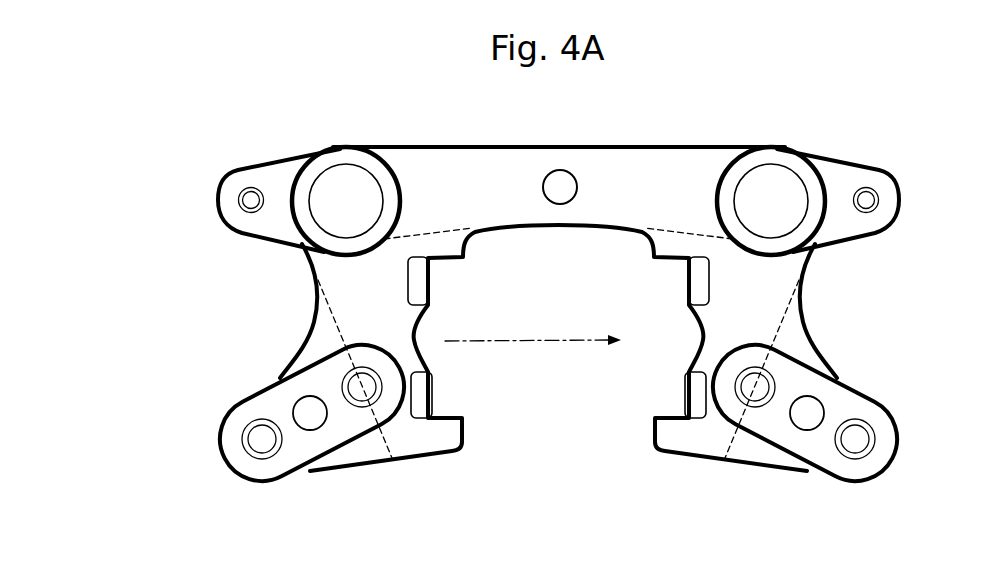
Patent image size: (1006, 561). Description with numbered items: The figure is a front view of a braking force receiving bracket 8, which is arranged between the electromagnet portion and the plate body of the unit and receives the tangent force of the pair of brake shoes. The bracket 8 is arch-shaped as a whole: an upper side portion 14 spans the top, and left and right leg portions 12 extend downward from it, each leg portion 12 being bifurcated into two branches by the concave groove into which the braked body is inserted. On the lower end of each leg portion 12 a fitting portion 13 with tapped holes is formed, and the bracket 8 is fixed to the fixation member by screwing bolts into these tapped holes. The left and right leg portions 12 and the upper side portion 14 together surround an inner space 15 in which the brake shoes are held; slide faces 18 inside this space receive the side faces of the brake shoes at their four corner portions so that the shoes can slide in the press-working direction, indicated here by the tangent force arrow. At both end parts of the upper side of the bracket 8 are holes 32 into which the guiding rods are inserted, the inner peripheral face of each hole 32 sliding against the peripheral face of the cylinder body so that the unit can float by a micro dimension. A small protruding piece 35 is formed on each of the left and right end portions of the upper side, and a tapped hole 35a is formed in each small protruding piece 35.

The braking force receiving bracket 8 is at (674, 144).
The leg portion 12 is at (337, 322).
The fitting portion 13 is at (304, 445).
The upper side portion 14 is at (476, 168).
The inner space 15 is at (612, 418).
The slide face 18 is at (432, 288).
The hole 32 is at (348, 172).
The small protruding piece 35 is at (228, 190).
The tapped hole 35a is at (240, 203).